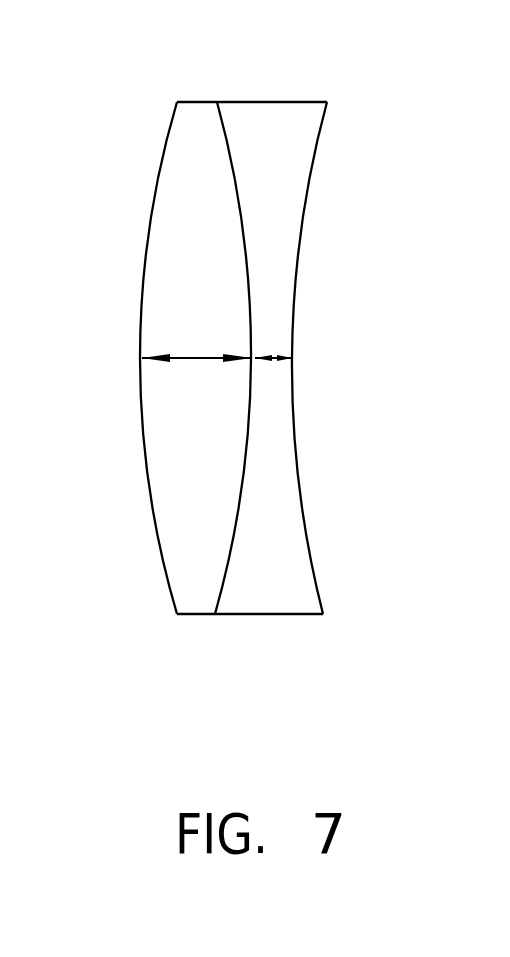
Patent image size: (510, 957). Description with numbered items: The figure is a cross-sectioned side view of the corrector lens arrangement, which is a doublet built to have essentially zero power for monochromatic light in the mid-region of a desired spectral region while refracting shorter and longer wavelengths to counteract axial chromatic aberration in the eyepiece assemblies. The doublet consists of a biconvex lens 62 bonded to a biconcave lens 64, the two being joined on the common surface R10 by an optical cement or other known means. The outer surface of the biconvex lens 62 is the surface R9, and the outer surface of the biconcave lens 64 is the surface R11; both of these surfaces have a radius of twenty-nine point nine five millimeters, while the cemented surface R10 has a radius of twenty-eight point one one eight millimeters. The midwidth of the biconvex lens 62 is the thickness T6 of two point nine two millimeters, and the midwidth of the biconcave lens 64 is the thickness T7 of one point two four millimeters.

The biconvex lens 62 is at (164, 368).
The biconcave lens 64 is at (332, 336).
The midwidth of biconvex lens T6 is at (148, 292).
The midwidth of biconcave lens T7 is at (254, 358).
The radius of surface R9 is at (164, 578).
The radius of surface R10 is at (227, 580).
The radius of surface R11 is at (315, 574).